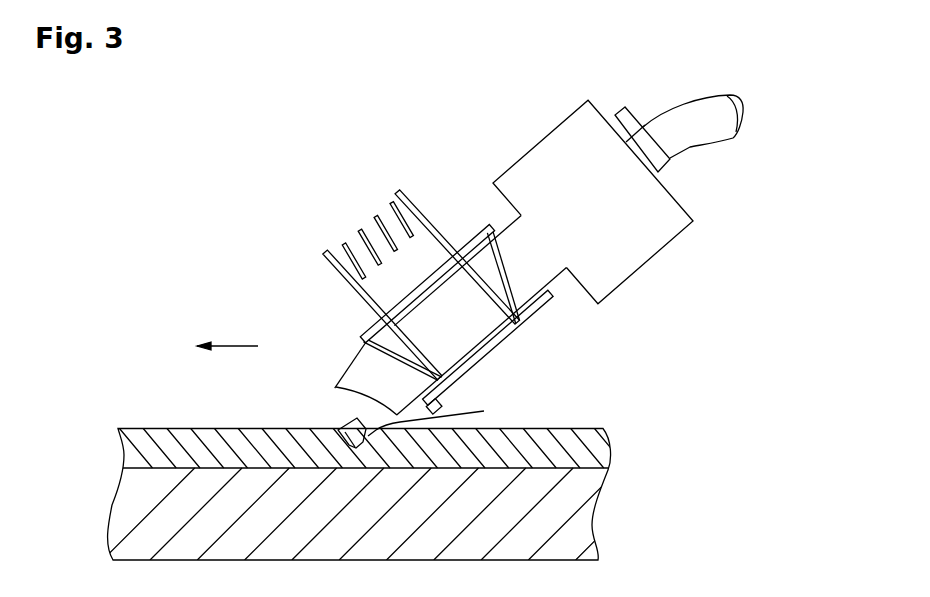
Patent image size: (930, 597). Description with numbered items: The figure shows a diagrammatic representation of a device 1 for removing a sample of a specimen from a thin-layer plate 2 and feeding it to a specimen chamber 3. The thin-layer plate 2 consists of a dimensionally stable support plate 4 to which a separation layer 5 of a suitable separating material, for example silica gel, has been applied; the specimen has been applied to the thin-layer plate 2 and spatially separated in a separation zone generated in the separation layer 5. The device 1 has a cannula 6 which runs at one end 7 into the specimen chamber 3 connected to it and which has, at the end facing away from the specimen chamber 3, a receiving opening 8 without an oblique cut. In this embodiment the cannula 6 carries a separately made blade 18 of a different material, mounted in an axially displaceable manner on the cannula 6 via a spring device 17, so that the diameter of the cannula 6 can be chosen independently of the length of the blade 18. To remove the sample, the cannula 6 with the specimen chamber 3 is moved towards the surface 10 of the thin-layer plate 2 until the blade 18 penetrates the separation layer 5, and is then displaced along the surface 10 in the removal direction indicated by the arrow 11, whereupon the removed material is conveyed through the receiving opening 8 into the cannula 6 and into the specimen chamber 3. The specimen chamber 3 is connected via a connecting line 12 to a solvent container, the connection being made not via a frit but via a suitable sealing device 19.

The device 1 is at (468, 137).
The thin-layer plate 2 is at (150, 398).
The specimen chamber 3 is at (664, 229).
The support plate 4 is at (145, 500).
The separation layer 5 is at (143, 443).
The cannula 6 is at (474, 327).
The end 7 is at (496, 210).
The receiving opening 8 is at (334, 394).
The surface 10 is at (224, 429).
The arrow 11 is at (224, 346).
The connecting line 12 is at (690, 134).
The spring device 17 is at (348, 209).
The blade 18 is at (484, 411).
The sealing device 19 is at (633, 104).